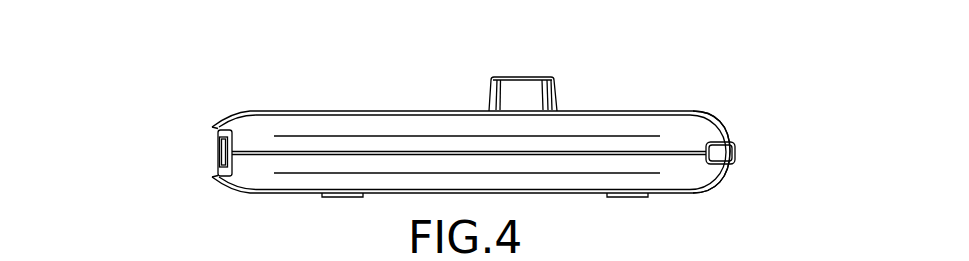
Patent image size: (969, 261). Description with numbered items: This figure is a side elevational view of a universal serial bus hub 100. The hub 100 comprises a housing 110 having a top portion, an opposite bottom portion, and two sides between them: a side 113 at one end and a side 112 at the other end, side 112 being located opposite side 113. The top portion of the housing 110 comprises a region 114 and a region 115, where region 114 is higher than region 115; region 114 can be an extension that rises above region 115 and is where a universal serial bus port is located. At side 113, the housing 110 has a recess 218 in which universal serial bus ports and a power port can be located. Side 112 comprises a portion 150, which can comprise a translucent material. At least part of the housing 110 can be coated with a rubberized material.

The universal serial bus hub 100 is at (253, 48).
The housing 110 is at (298, 127).
The side 112 is at (748, 147).
The side 113 is at (206, 143).
The region 114 is at (522, 78).
The region 115 is at (400, 110).
The portion 150 is at (735, 157).
The recess 218 is at (215, 168).